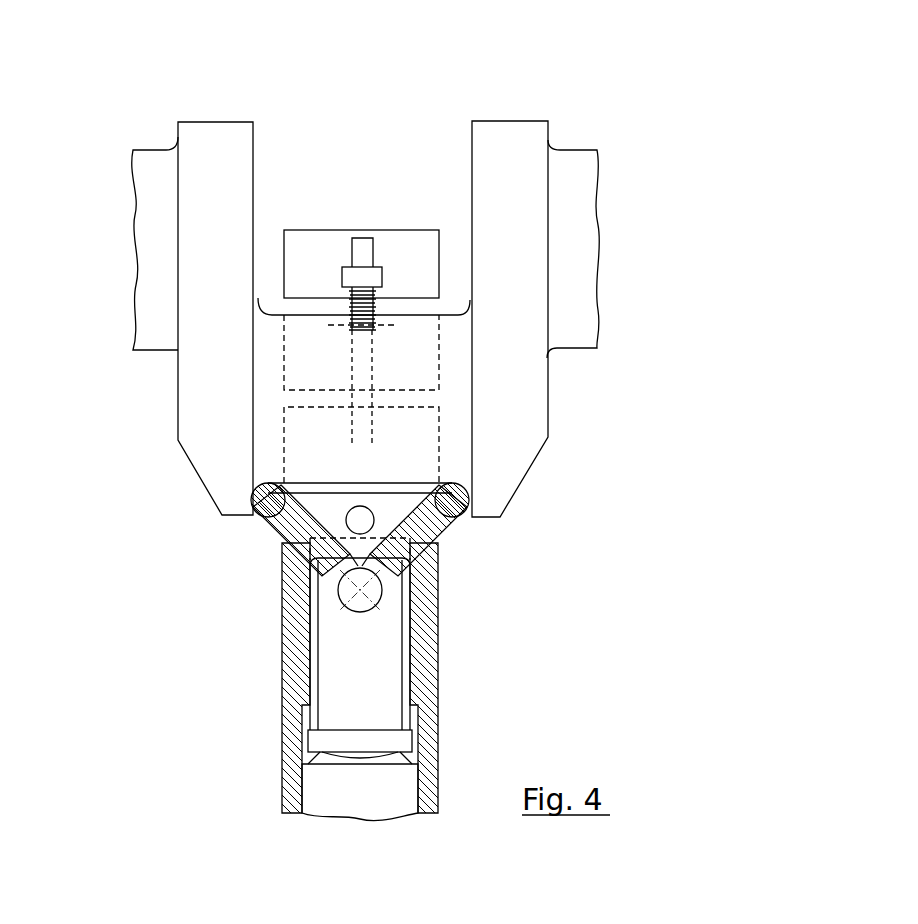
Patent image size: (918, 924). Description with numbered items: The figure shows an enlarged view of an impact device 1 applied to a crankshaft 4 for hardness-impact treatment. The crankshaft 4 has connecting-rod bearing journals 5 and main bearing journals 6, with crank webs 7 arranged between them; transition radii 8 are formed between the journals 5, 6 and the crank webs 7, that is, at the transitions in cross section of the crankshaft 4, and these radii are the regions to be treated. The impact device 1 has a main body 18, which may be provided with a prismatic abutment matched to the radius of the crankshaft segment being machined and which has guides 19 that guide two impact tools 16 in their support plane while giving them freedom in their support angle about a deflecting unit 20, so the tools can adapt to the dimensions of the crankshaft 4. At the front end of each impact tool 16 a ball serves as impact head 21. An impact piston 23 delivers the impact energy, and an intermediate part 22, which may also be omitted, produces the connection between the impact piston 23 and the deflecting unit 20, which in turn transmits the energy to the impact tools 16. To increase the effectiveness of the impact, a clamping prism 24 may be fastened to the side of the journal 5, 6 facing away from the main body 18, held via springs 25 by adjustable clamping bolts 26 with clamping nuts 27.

The impact device 1 is at (463, 697).
The crankshaft 4 is at (652, 187).
The connecting-rod bearing journal 5 is at (263, 347).
The main bearing journal 6 is at (147, 160).
The crank web 7 is at (217, 135).
The transition radius 8 is at (177, 147).
The impact tool 16 is at (453, 533).
The main body 18 is at (433, 673).
The guide 19 is at (297, 580).
The deflecting unit 20 is at (360, 608).
The impact head 21 is at (265, 512).
The intermediate part 22 is at (330, 714).
The impact piston 23 is at (320, 793).
The clamping prism 24 is at (300, 240).
The spring 25 is at (372, 330).
The clamping bolt 26 is at (360, 250).
The clamping nut 27 is at (376, 268).